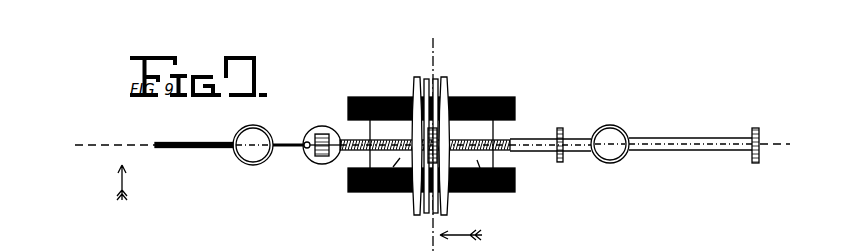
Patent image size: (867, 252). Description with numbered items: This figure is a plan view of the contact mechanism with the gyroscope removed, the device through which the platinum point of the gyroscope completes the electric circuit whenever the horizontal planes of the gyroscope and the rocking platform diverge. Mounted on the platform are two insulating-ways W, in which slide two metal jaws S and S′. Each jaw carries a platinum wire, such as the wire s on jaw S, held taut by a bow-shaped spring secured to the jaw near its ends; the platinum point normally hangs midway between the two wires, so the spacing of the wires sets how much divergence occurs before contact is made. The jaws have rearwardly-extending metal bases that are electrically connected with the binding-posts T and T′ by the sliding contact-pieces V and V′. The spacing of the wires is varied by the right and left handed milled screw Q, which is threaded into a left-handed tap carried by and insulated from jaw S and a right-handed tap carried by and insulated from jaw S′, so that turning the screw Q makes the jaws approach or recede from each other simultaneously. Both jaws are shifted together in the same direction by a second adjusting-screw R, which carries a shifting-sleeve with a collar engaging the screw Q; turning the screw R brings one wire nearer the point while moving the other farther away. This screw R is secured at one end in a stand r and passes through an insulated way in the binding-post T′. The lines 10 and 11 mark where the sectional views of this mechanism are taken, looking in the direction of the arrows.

The section line 10 is at (427, 147).
The section line 11 is at (440, 37).
The binding-post T is at (258, 152).
The sliding contact-piece V is at (291, 150).
The stand r is at (323, 133).
The right and left handed milled screw Q is at (511, 146).
The insulating-ways W is at (538, 197).
The metal jaw S is at (450, 100).
The platinum wire s is at (428, 80).
The metal jaw S′ is at (437, 80).
The second adjusting-screw R is at (668, 115).
The binding-post T′ is at (615, 140).
The sliding contact-piece V′ is at (694, 138).